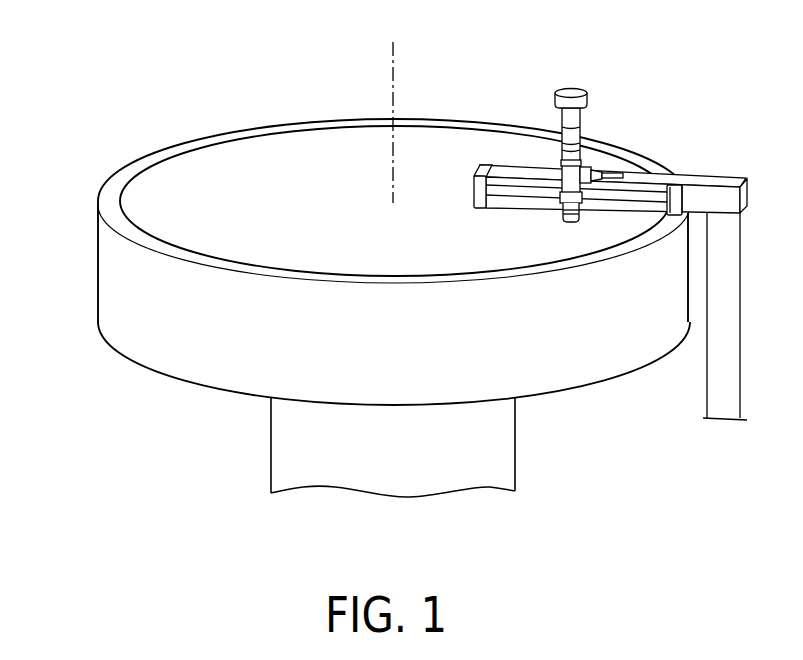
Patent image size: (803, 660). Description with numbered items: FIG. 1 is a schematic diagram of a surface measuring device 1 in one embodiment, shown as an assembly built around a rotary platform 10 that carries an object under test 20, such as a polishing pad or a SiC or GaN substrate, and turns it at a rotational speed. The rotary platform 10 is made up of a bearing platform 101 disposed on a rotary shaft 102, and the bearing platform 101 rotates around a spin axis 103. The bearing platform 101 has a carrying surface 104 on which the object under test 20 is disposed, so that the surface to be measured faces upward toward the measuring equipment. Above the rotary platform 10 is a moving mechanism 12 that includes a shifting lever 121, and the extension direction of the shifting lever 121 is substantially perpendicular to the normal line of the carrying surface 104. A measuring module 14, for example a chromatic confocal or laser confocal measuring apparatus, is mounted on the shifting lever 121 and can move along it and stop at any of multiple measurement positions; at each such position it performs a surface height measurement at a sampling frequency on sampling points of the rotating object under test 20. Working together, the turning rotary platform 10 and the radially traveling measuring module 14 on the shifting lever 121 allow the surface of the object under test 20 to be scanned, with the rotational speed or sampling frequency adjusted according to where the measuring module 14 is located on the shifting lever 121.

The surface measuring device 1 is at (105, 65).
The rotary platform 10 is at (353, 269).
The bearing platform 101 is at (208, 325).
The rotary shaft 102 is at (307, 443).
The spin axis 103 is at (390, 67).
The carrying surface 104 is at (453, 127).
The object under test 20 is at (230, 180).
The moving mechanism 12 is at (610, 265).
The shifting lever 121 is at (652, 178).
The measuring module 14 is at (570, 92).